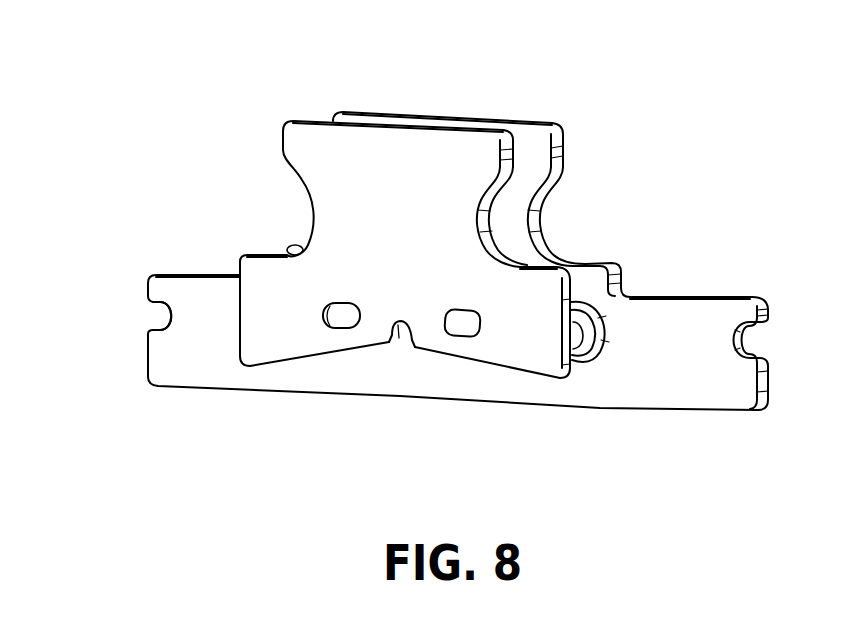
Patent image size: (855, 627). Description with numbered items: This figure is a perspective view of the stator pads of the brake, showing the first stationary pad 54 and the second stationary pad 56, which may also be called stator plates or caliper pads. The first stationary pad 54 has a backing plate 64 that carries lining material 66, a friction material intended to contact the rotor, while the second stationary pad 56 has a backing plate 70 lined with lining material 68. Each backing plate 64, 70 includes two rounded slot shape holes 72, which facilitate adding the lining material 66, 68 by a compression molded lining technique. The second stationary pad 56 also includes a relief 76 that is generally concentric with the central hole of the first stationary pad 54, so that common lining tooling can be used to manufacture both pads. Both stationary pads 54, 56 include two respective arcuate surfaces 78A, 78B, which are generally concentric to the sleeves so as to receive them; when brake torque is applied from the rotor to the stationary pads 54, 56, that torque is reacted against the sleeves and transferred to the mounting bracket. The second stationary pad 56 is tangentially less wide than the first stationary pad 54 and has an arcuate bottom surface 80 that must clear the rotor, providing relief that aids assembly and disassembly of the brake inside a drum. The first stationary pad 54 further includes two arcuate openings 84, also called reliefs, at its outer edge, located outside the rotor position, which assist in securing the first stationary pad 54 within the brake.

The first stationary pad 54 is at (400, 251).
The second stationary pad 56 is at (268, 236).
The backing plate 64 is at (400, 228).
The lining material 66 is at (605, 335).
The lining material 68 is at (580, 338).
The backing plate 70 is at (417, 277).
The rounded slot shape holes 72 is at (327, 331).
The relief 76 is at (397, 343).
The arcuate surface 78A is at (540, 192).
The arcuate surface 78B is at (483, 233).
The arcuate bottom surface 80 is at (293, 356).
The arcuate openings 84 is at (148, 302).